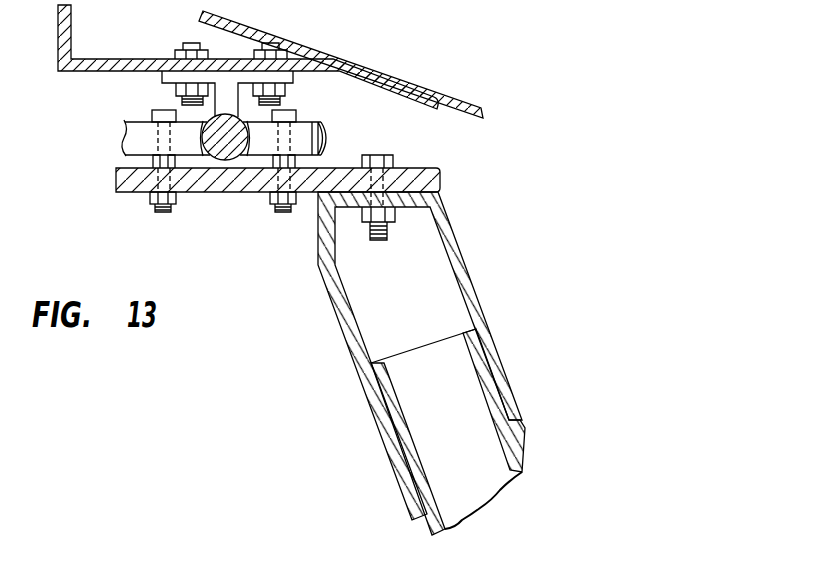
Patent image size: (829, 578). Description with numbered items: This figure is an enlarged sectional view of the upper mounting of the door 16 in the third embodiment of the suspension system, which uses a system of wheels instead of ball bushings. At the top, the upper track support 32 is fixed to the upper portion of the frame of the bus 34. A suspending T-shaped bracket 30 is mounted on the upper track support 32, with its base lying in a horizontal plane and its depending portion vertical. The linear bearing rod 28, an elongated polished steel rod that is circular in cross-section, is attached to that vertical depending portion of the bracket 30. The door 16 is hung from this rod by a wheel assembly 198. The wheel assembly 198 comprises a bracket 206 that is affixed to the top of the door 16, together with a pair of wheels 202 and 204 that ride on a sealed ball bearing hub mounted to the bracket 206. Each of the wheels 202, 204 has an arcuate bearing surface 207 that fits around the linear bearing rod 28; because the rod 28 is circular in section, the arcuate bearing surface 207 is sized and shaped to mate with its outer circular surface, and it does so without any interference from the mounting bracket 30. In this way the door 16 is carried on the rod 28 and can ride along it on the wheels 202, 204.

The door 16 is at (521, 422).
The linear bearing rod 28 is at (242, 118).
The suspending T-shaped bracket 30 is at (216, 98).
The upper track support 32 is at (98, 63).
The bus 34 is at (303, 43).
The wheel assembly 198 is at (333, 132).
The wheel 202 is at (137, 138).
The wheel 204 is at (327, 142).
The bracket 206 is at (228, 180).
The arcuate bearing surface 207 is at (123, 150).